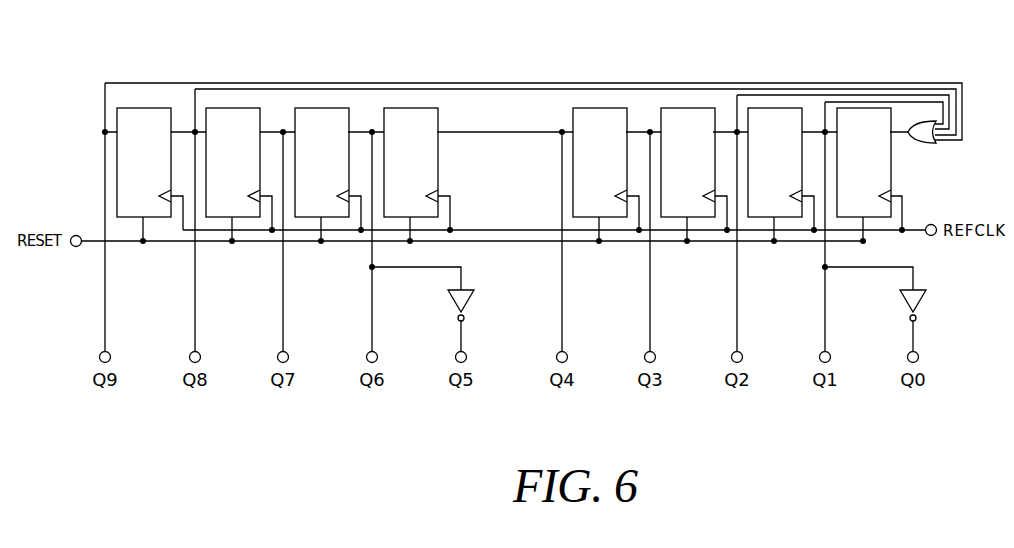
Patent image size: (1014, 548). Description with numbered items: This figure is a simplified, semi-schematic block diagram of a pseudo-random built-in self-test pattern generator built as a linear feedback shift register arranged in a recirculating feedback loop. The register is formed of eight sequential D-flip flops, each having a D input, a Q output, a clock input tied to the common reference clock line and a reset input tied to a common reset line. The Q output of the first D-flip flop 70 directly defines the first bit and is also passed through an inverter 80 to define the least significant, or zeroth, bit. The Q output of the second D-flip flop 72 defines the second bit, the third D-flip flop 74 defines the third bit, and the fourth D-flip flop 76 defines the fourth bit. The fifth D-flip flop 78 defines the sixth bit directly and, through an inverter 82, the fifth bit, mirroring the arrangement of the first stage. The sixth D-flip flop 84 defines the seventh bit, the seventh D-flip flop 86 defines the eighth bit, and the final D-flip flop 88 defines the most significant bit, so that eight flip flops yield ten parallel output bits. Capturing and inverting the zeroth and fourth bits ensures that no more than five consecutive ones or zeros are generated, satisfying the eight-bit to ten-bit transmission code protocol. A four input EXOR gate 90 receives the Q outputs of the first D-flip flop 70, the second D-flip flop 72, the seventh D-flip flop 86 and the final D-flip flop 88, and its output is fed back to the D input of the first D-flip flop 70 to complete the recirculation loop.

The first D-flip flop 70 is at (866, 117).
The second D-flip flop 72 is at (779, 117).
The third D-flip flop 74 is at (692, 117).
The fourth D-flip flop 76 is at (604, 117).
The fifth D-flip flop 78 is at (415, 117).
The sixth D-flip flop 84 is at (326, 117).
The seventh D-flip flop 86 is at (237, 117).
The final D-flip flop 88 is at (147, 117).
The inverter 80 is at (907, 301).
The inverter 82 is at (455, 301).
The four input EXOR gate 90 is at (928, 143).